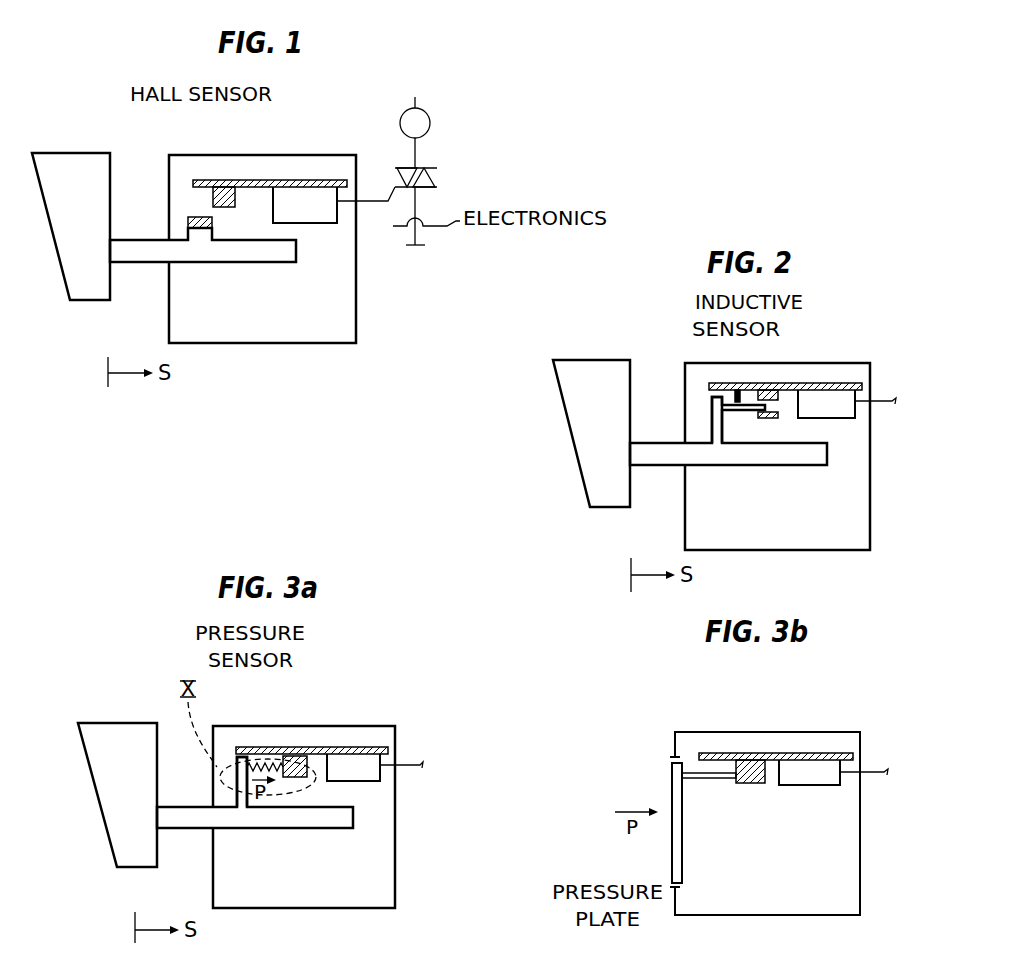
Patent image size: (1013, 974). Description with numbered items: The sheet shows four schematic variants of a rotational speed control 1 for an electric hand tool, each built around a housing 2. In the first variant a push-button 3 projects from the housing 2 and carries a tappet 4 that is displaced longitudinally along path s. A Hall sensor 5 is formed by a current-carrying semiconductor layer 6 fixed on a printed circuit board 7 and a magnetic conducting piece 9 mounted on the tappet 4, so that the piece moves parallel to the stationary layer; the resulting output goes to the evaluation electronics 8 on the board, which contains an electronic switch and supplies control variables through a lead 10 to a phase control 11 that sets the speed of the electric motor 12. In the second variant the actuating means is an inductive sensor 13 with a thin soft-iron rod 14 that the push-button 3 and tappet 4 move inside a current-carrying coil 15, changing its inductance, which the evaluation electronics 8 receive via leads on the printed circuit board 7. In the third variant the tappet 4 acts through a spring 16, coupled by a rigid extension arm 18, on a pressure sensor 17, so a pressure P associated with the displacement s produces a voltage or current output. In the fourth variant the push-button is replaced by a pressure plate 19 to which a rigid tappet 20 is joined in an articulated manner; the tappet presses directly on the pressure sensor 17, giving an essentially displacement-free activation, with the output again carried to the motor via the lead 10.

In FIG. 1, the rotational speed control 1 is at (258, 146).
In FIG. 1, the housing 2 is at (333, 323).
In FIG. 2, the housing 2 is at (848, 528).
In FIG. 3A, the housing 2 is at (373, 887).
In FIG. 3B, the housing 2 is at (865, 885).
In FIG. 1, the push-button 3 is at (70, 168).
In FIG. 2, the push-button 3 is at (583, 375).
In FIG. 3A, the push-button 3 is at (110, 738).
In FIG. 1, the tappet 4 is at (215, 221).
In FIG. 2, the tappet 4 is at (795, 455).
In FIG. 3A, the tappet 4 is at (323, 818).
In FIG. 1, the Hall sensor 5 is at (182, 215).
In FIG. 1, the semiconductor layer 6 is at (220, 180).
In FIG. 1, the printed circuit board 7 is at (327, 180).
In FIG. 2, the printed circuit board 7 is at (842, 384).
In FIG. 3A, the printed circuit board 7 is at (370, 746).
In FIG. 3B, the printed circuit board 7 is at (832, 753).
In FIG. 1, the evaluation electronics 8 is at (320, 211).
In FIG. 2, the evaluation electronics 8 is at (830, 406).
In FIG. 3A, the evaluation electronics 8 is at (377, 781).
In FIG. 3B, the evaluation electronics 8 is at (806, 772).
In FIG. 1, the magnetic conducting piece 9 is at (280, 253).
In FIG. 1, the lead 10 is at (370, 201).
In FIG. 2, the lead 10 is at (883, 399).
In FIG. 3A, the lead 10 is at (408, 764).
In FIG. 3B, the lead 10 is at (875, 770).
In FIG. 1, the phase control 11 is at (441, 178).
In FIG. 1, the electric motor 12 is at (434, 130).
In FIG. 2, the inductive sensor 13 is at (786, 411).
In FIG. 2, the soft-iron rod 14 is at (737, 383).
In FIG. 2, the coil 15 is at (773, 389).
In FIG. 3A, the spring 16 is at (262, 756).
In FIG. 3A, the pressure sensor 17 is at (295, 756).
In FIG. 3B, the pressure sensor 17 is at (757, 760).
In FIG. 2, the rigid extension arm 18 is at (712, 421).
In FIG. 3A, the rigid extension arm 18 is at (240, 780).
In FIG. 3B, the pressure plate 19 is at (672, 857).
In FIG. 3B, the rigid tappet 20 is at (683, 766).